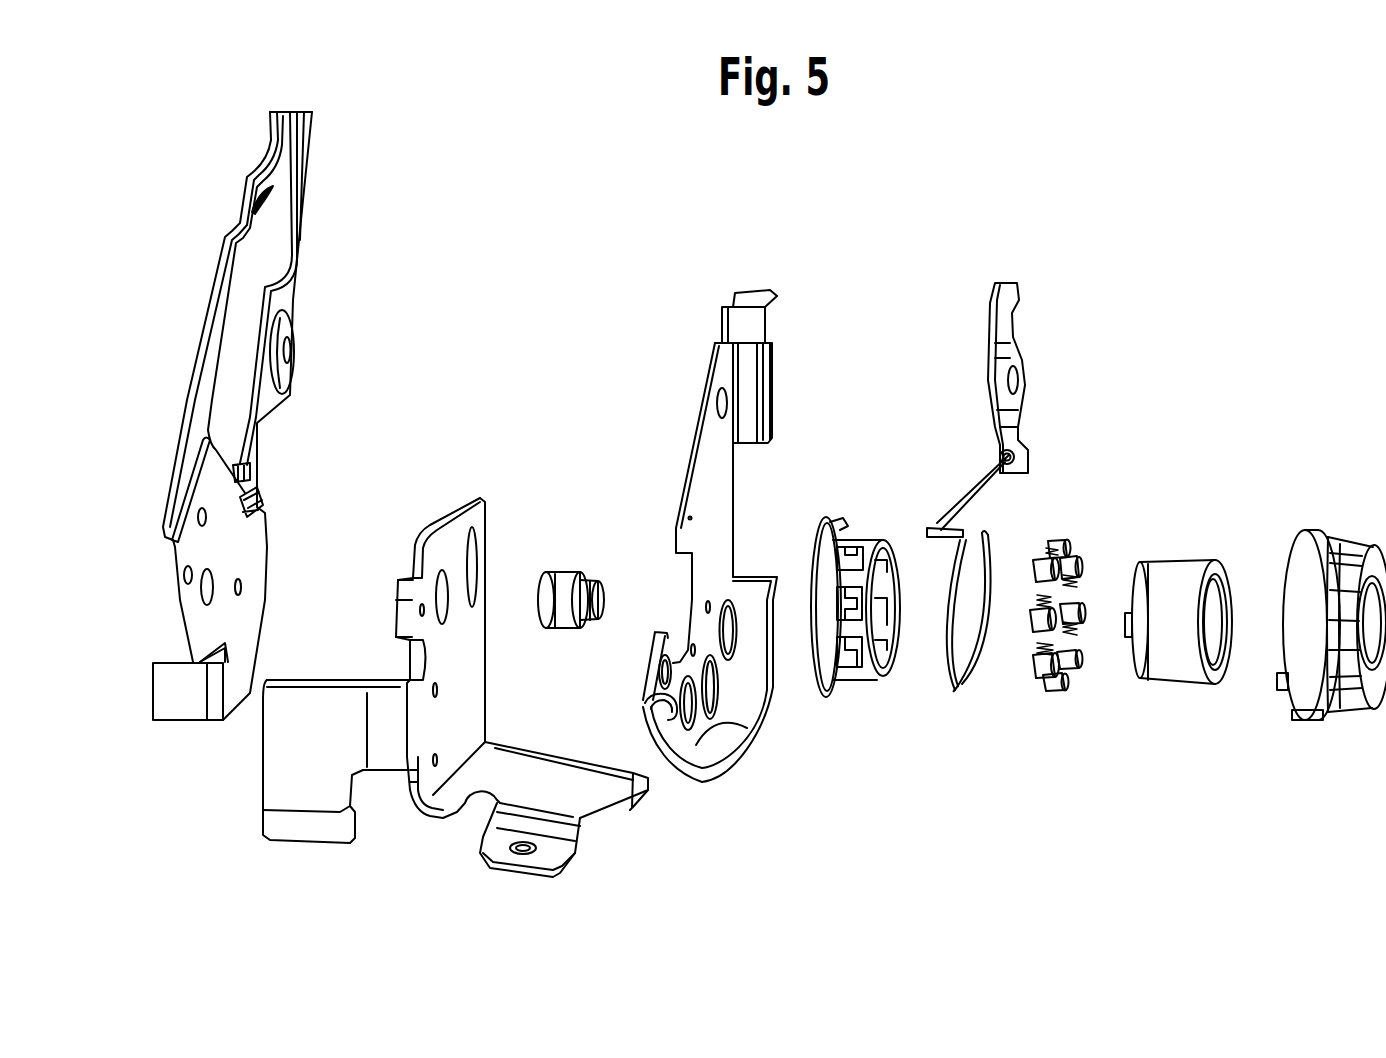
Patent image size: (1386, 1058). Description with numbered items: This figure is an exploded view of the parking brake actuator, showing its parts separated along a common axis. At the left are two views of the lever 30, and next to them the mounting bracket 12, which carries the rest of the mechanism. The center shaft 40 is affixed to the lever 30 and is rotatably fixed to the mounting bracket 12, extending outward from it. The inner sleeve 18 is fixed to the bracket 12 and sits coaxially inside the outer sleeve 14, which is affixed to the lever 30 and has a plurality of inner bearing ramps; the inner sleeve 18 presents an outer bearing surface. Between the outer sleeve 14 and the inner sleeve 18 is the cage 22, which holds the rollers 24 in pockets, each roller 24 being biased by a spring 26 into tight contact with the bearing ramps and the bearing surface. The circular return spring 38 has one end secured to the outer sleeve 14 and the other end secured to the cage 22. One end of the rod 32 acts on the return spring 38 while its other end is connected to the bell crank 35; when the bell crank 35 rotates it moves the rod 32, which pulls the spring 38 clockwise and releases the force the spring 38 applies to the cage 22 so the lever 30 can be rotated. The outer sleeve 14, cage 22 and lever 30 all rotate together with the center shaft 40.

The mounting bracket 12 is at (472, 497).
The outer sleeve 14 is at (1305, 540).
The inner sleeve 18 is at (1173, 572).
The cage 22 is at (840, 522).
The rollers 24 is at (1057, 535).
The spring 26 is at (1043, 553).
The lever 30 is at (256, 528).
The rod 32 is at (947, 503).
The bell crank 35 is at (1013, 330).
The return spring 38 is at (958, 697).
The center shaft 40 is at (570, 578).